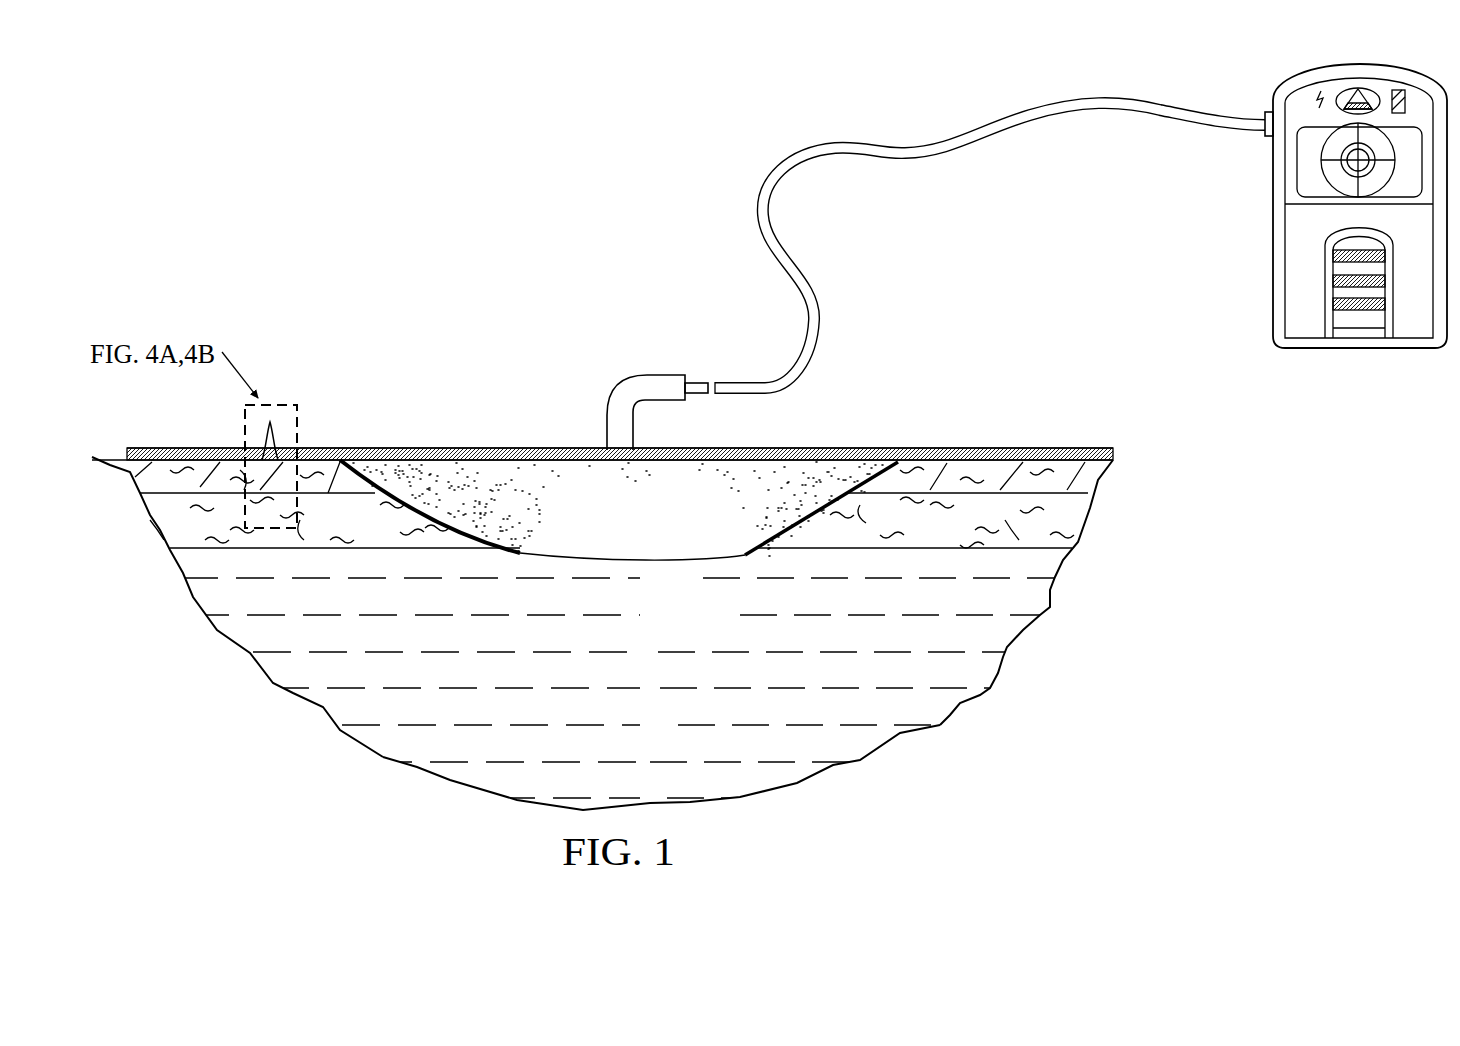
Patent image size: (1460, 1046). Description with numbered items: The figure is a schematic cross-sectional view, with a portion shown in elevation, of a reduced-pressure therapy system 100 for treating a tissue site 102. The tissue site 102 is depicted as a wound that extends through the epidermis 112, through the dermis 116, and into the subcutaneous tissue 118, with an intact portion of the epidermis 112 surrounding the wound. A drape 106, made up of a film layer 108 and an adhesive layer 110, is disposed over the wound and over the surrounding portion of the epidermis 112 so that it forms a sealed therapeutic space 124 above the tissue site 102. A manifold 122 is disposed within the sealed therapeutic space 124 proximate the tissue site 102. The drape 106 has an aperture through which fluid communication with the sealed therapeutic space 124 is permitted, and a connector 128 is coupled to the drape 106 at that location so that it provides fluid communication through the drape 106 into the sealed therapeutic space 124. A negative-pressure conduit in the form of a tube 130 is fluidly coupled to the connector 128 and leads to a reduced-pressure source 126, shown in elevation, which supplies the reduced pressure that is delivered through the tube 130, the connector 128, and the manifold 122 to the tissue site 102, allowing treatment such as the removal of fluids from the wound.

The reduced-pressure therapy system 100 is at (543, 246).
The tissue site 102 is at (737, 562).
The drape 106 is at (396, 444).
The film layer 108 is at (1077, 448).
The adhesive layer 110 is at (1048, 447).
The epidermis 112 is at (1100, 482).
The dermis 116 is at (162, 528).
The subcutaneous tissue 118 is at (645, 679).
The manifold 122 is at (645, 519).
The sealed therapeutic space 124 is at (897, 478).
The reduced-pressure source 126 is at (1270, 278).
The connector 128 is at (620, 387).
The tube 130 is at (757, 200).